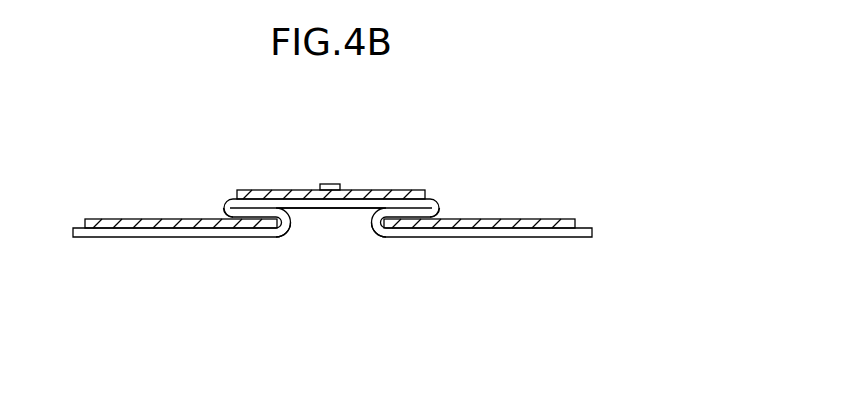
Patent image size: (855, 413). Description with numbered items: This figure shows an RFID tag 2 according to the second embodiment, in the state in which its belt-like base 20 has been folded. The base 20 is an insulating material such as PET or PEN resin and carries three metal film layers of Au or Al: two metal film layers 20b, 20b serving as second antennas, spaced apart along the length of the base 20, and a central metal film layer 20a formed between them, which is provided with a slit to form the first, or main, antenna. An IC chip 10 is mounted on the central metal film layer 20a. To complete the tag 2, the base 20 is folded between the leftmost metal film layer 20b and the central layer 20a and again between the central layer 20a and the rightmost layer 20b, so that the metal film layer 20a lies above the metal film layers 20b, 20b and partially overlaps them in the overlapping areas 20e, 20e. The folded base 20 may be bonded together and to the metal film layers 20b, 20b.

The RFID tag 2 is at (456, 134).
The IC chip 10 is at (330, 184).
The belt-like base 20 is at (563, 237).
The metal film layer 20a is at (370, 190).
The metal film layer 20b is at (168, 219).
The overlapping area 20e is at (275, 240).